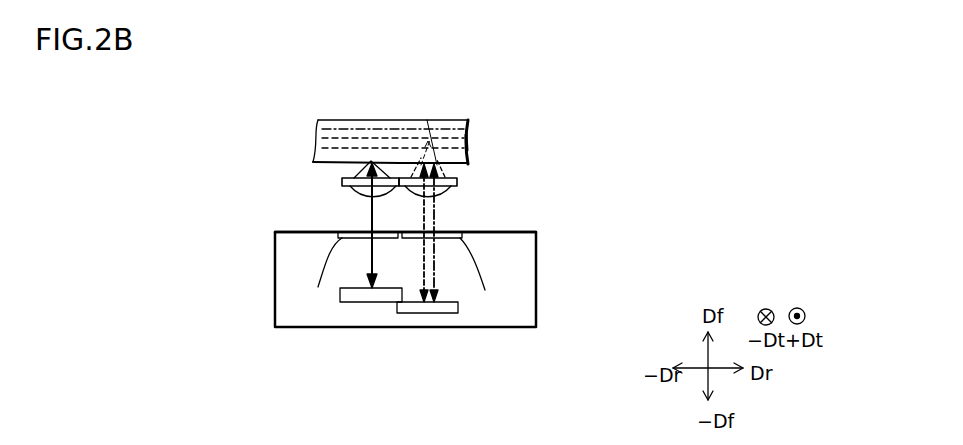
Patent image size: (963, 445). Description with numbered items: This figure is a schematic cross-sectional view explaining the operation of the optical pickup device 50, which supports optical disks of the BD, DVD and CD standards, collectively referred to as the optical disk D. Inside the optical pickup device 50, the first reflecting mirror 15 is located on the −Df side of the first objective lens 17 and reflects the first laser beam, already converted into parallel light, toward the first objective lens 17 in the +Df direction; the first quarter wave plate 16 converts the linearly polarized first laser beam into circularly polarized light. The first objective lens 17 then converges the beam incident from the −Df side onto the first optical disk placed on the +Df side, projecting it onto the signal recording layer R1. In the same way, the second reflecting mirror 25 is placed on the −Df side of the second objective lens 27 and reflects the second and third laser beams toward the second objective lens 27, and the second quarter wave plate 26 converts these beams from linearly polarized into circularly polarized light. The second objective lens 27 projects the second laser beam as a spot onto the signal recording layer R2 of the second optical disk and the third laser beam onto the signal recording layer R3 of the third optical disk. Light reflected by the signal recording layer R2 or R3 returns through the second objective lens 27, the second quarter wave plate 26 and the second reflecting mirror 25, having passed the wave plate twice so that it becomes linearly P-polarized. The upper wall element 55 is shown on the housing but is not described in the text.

The optical disk D is at (463, 122).
The signal recording layer R1 is at (316, 163).
The signal recording layer R2 is at (468, 142).
The signal recording layer R3 is at (469, 123).
The first reflecting mirror 15 is at (363, 302).
The first quarter wave plate 16 is at (318, 287).
The first objective lens 17 is at (338, 195).
The second reflecting mirror 25 is at (437, 313).
The second quarter wave plate 26 is at (485, 290).
The second objective lens 27 is at (440, 190).
The optical pickup device 50 is at (528, 302).
The housing upper wall 55 is at (537, 250).